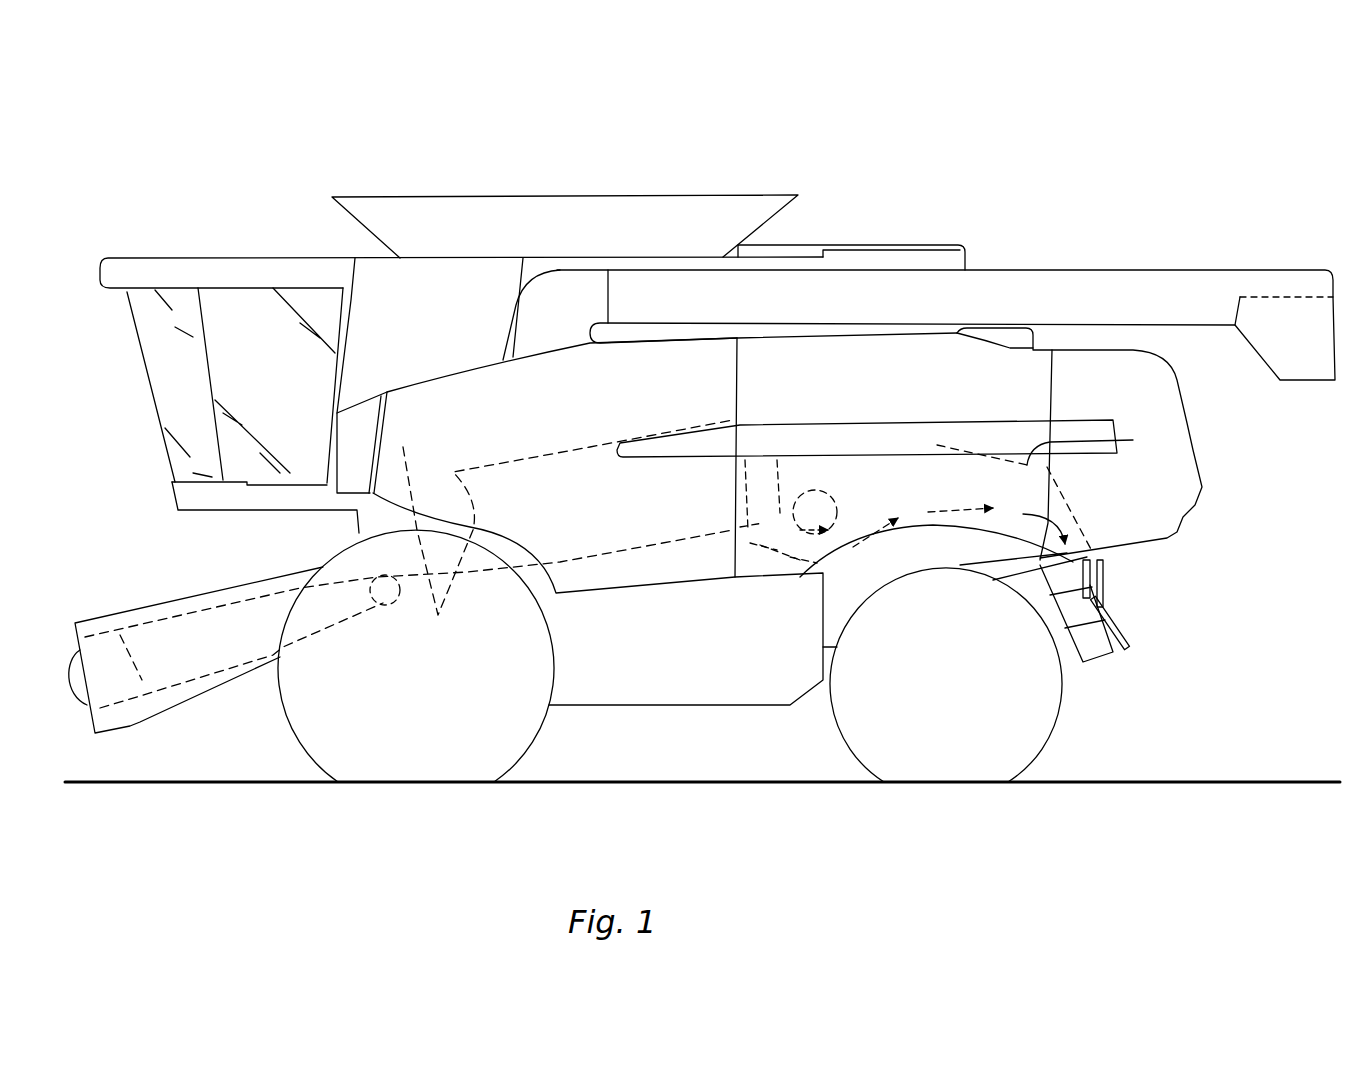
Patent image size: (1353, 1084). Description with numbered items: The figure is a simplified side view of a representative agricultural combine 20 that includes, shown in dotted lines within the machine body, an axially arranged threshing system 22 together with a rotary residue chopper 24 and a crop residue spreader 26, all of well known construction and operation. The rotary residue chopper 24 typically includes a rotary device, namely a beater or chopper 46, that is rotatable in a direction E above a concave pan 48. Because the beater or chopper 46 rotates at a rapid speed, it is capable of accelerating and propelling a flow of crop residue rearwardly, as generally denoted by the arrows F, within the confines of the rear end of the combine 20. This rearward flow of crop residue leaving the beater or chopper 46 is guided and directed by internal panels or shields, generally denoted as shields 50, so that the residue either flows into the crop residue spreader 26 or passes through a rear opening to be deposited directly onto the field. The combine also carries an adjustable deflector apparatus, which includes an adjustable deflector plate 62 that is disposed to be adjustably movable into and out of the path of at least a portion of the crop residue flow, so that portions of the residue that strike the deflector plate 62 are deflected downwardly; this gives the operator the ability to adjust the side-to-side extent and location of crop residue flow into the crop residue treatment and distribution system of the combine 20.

The agricultural combine 20 is at (1247, 160).
The axially arranged threshing system 22 is at (521, 457).
The rotary residue chopper 24 is at (841, 478).
The crop residue spreader 26 is at (1121, 666).
The beater or chopper 46 is at (850, 497).
The concave pan 48 is at (776, 559).
The shields 50 is at (1065, 485).
The adjustable deflector plate 62 is at (774, 461).
The direction of rotation E is at (823, 535).
The crop residue flow arrows F is at (965, 505).